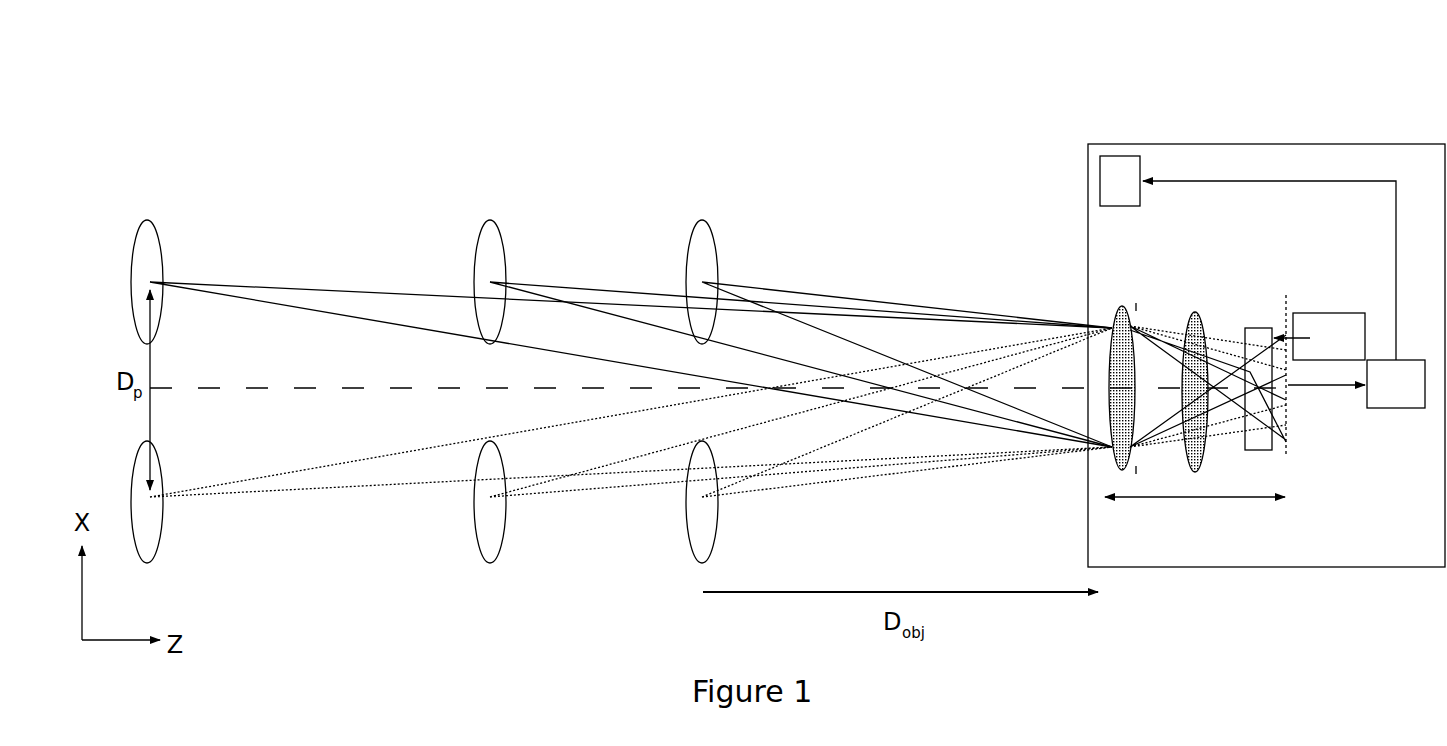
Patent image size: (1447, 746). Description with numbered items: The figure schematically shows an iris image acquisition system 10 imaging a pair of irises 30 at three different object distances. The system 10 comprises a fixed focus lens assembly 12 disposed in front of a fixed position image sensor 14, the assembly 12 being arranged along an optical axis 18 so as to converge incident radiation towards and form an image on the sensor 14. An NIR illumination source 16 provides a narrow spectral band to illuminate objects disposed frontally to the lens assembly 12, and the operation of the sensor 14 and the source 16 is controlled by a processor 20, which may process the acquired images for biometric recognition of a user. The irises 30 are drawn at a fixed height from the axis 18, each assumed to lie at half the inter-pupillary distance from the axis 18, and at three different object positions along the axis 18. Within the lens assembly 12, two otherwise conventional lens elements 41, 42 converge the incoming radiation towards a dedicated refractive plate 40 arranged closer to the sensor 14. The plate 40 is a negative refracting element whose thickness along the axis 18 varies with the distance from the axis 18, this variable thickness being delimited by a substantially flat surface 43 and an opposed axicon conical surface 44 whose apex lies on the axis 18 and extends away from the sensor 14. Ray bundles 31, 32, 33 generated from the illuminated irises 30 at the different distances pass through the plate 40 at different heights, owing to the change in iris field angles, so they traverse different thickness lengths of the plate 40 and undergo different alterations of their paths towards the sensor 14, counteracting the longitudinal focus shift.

The iris image acquisition system 10 is at (1244, 142).
The fixed focus lens assembly 12 is at (1292, 464).
The image sensor 14 is at (1291, 305).
The NIR illumination source 16 is at (1248, 258).
The optical axis 18 is at (714, 373).
The processor 20 is at (1356, 384).
The irises 30 is at (161, 383).
The ray bundle 31 is at (631, 379).
The ray bundle 32 is at (793, 391).
The ray bundle 33 is at (899, 391).
The refractive plate 40 is at (1264, 311).
The lens element 41 is at (1125, 306).
The lens element 42 is at (1195, 311).
The flat surface 43 is at (1246, 326).
The axicon conical surface 44 is at (1319, 336).